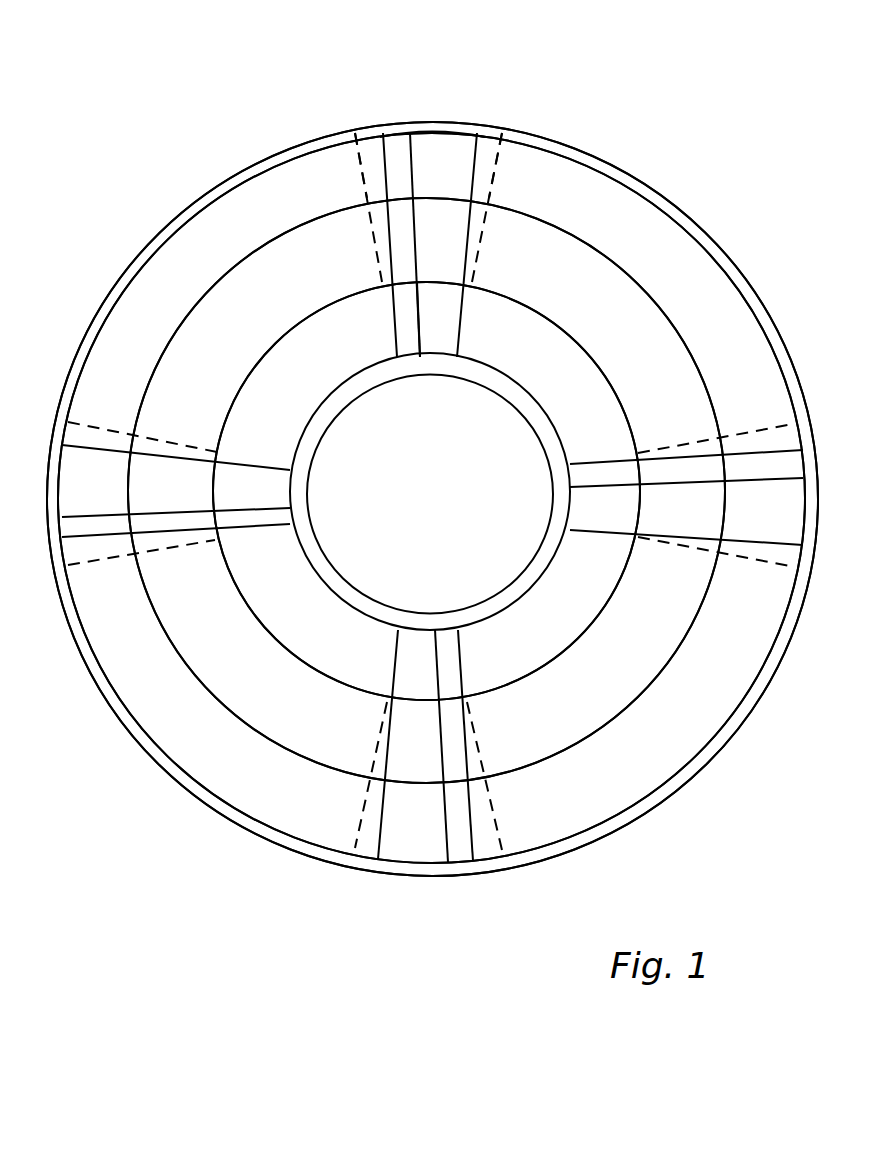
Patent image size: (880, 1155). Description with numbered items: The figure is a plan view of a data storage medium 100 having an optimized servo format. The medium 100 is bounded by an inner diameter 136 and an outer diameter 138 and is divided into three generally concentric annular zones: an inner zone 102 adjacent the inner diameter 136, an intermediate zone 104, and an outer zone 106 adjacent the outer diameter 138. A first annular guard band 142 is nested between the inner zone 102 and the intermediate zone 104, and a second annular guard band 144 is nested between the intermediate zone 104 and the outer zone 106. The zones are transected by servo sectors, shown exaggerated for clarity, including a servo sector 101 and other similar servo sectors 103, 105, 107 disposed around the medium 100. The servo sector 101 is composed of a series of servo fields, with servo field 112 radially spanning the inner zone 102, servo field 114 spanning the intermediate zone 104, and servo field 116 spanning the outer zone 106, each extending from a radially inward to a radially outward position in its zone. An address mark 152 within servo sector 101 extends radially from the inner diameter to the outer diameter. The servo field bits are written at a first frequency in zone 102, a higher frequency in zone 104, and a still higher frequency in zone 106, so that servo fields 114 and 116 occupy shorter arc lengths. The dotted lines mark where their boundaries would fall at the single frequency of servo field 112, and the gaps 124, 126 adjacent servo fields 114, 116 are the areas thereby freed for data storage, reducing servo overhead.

The data storage medium 100 is at (156, 94).
The servo sector 101 is at (438, 121).
The inner zone 102 is at (553, 348).
The servo sector 103 is at (567, 497).
The intermediate zone 104 is at (650, 350).
The servo sector 105 is at (420, 866).
The outer zone 106 is at (735, 352).
The servo sector 107 is at (293, 492).
The servo field 112 is at (442, 333).
The servo field 114 is at (445, 247).
The servo field 116 is at (425, 155).
The gap 124 is at (372, 227).
The gap 126 is at (368, 150).
The inner diameter 136 is at (390, 380).
The outer diameter 138 is at (173, 215).
The first annular guard band 142 is at (260, 358).
The second annular guard band 144 is at (207, 292).
The address mark 152 is at (403, 245).